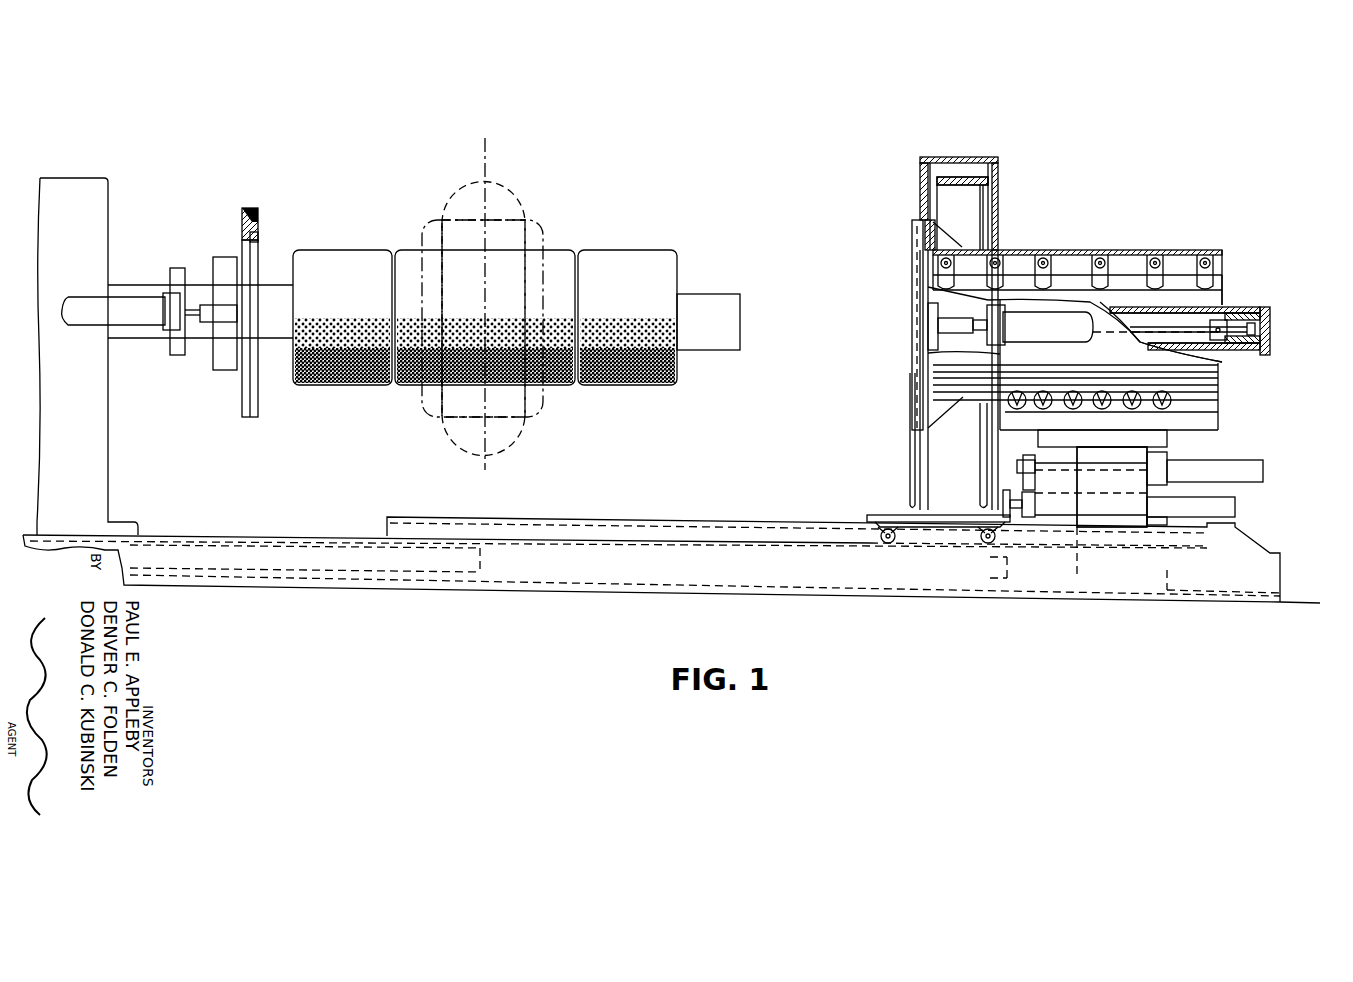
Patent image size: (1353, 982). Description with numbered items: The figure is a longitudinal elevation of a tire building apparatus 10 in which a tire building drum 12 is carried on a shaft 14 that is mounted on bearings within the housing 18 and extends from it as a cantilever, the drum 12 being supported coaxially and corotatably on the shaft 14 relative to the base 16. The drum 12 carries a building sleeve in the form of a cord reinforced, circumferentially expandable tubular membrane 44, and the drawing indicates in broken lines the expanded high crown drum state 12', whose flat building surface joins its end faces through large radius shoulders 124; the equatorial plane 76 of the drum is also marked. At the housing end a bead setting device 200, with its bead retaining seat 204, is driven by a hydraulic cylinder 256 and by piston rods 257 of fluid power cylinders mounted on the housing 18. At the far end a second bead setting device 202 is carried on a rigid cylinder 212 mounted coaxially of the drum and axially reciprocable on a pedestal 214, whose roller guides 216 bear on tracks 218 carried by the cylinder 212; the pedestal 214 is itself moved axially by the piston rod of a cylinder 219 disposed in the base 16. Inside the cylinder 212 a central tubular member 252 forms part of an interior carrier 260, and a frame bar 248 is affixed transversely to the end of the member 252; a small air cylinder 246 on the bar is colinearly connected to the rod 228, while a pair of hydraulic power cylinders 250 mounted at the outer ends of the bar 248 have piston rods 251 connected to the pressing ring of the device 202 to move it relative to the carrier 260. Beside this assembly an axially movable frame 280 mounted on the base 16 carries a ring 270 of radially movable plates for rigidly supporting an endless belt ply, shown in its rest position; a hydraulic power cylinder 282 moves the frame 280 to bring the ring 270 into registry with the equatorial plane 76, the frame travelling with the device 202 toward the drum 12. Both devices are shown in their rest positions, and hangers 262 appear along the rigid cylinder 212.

The apparatus 10 is at (985, 108).
The housing 18 is at (84, 186).
The bead setting device 200 is at (238, 208).
The bead retaining seat 204 is at (258, 238).
The hydraulic cylinder 256 is at (139, 322).
The piston rod 257 is at (225, 322).
The large radius shoulder 124 is at (425, 225).
The equatorial plane 76 is at (487, 157).
The tire building drum 12 is at (526, 298).
The high crown drum state 12' is at (446, 334).
The tubular membrane 44 is at (555, 262).
The shaft 14 is at (720, 350).
The axially movable frame 280 is at (975, 158).
The ring 270 is at (965, 185).
The bead setting device 202 is at (913, 278).
The rigid cylinder 212 is at (1072, 252).
The hangers 262 is at (1150, 252).
The interior carrier 260 is at (1222, 285).
The central tubular member 252 is at (1203, 308).
The frame bar 248 is at (1265, 310).
The small air cylinder 246 is at (1262, 333).
The rod 228 is at (1205, 360).
The track 218 is at (1207, 403).
The roller guide 216 is at (1140, 408).
The piston rod 251 is at (950, 325).
The hydraulic fluid power cylinder 250 is at (1020, 333).
The hydraulic power cylinder 282 is at (1220, 505).
The cylinder 219 is at (420, 570).
The base 16 is at (918, 578).
The pedestal 214 is at (1147, 548).